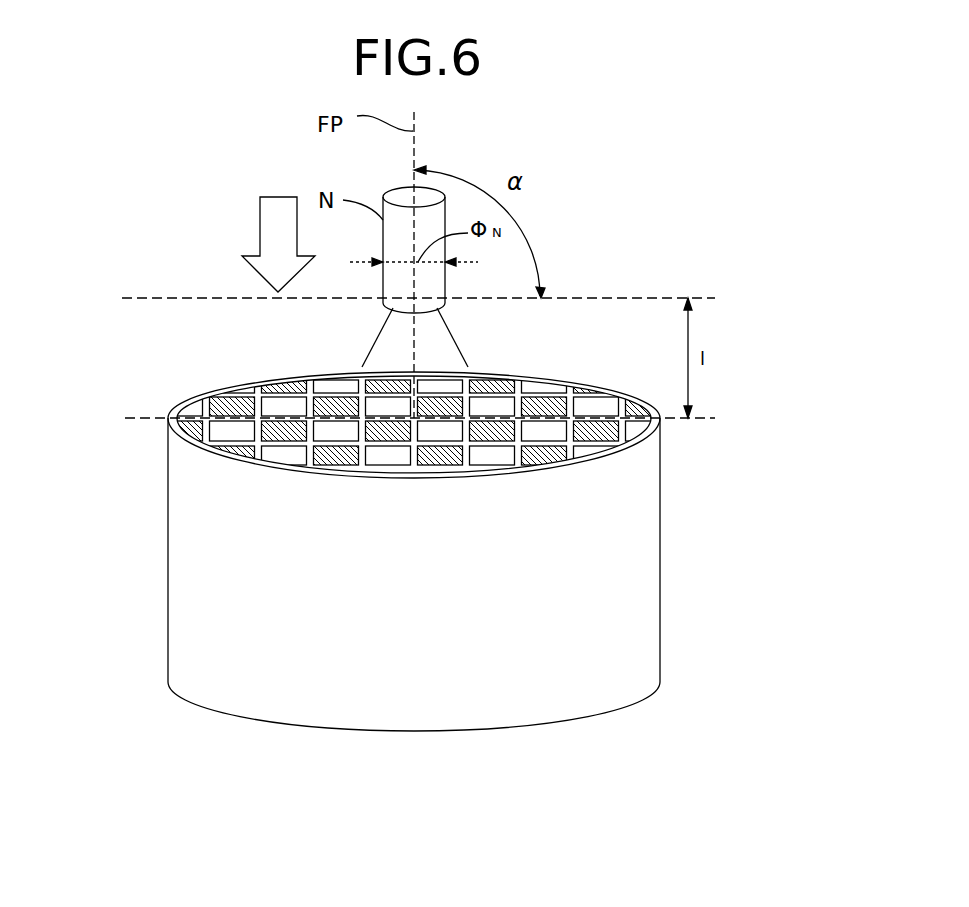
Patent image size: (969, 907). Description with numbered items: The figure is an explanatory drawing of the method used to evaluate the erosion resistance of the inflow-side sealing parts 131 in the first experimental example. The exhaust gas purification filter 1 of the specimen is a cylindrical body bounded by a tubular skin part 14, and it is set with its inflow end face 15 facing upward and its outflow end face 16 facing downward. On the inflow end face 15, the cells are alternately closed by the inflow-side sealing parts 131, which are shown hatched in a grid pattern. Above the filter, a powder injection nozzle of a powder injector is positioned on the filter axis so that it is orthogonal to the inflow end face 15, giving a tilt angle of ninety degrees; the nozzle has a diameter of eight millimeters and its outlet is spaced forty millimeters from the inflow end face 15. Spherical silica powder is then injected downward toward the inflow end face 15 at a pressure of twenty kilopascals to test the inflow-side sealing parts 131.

The exhaust gas purification filter 1 is at (397, 543).
The skin part 14 is at (618, 555).
The inflow end face 15 is at (364, 391).
The outflow end face 16 is at (218, 711).
The inflow-side sealing part 131 is at (443, 400).